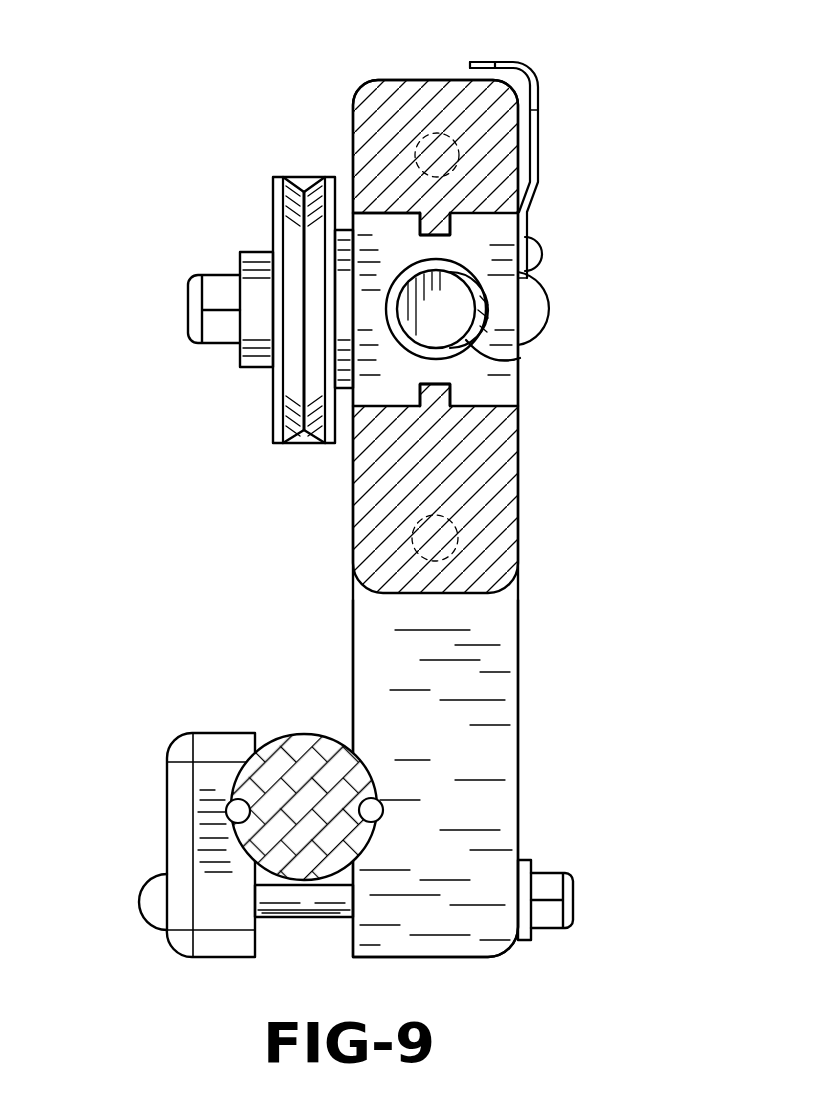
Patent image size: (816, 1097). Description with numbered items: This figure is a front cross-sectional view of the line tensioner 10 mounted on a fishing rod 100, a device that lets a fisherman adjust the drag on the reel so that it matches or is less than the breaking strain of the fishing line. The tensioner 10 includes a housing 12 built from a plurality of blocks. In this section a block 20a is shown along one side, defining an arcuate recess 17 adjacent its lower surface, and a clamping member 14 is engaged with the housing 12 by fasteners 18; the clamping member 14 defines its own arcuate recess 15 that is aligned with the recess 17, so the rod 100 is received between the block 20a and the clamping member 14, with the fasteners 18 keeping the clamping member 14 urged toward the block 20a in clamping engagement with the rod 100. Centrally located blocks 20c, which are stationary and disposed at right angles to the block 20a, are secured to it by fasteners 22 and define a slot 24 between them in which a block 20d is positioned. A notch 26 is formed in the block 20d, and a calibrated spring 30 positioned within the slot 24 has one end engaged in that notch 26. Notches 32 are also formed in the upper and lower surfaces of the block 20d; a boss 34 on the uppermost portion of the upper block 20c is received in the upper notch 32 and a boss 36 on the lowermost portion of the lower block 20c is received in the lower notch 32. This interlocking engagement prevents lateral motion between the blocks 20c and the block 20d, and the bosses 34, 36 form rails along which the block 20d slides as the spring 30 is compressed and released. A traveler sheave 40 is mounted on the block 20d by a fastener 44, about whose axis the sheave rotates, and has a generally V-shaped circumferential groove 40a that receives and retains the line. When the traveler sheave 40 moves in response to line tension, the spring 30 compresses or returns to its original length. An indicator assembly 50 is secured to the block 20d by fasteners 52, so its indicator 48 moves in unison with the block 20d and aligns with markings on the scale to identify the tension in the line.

The line tensioner 10 is at (268, 73).
The housing 12 is at (350, 545).
The clamping member 14 is at (163, 785).
The arcuate recess 15 is at (236, 824).
The arcuate recess 17 is at (373, 819).
The fasteners 18 is at (302, 919).
The block 20a is at (514, 740).
The blocks 20c is at (350, 120).
The block 20d is at (510, 381).
The fasteners 22 is at (437, 155).
The slot 24 is at (378, 226).
The notch 26 is at (452, 304).
The spring 30 is at (466, 340).
The notches 32 is at (445, 228).
The boss 34 is at (437, 233).
The boss 36 is at (430, 385).
The traveler sheave 40 is at (273, 198).
The V-shaped circumferential groove 40a is at (303, 232).
The fastener 44 is at (190, 310).
The indicator 48 is at (483, 62).
The indicator assembly 50 is at (540, 143).
The fasteners 52 is at (542, 252).
The fishing rod 100 is at (297, 730).